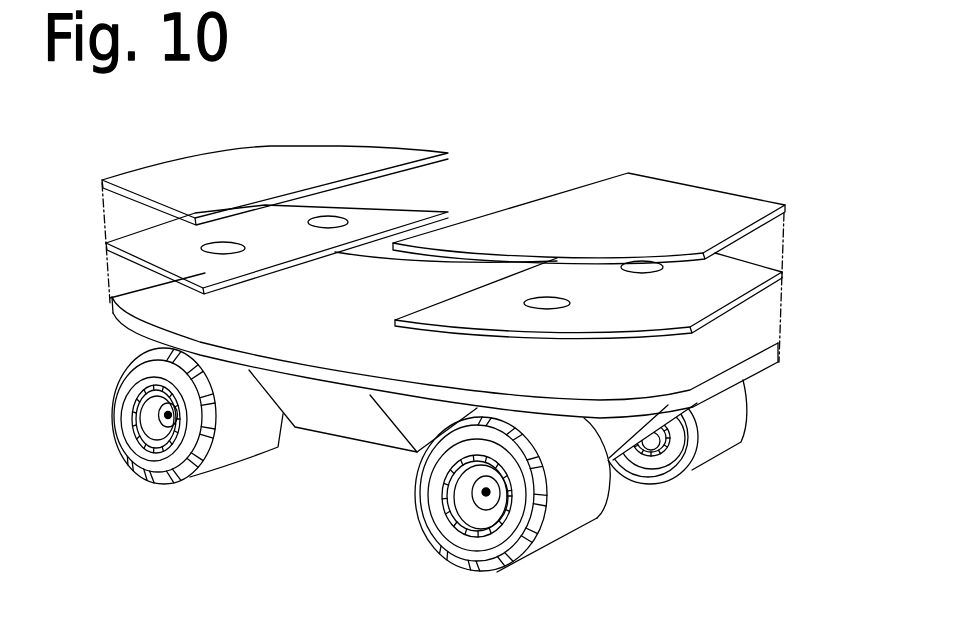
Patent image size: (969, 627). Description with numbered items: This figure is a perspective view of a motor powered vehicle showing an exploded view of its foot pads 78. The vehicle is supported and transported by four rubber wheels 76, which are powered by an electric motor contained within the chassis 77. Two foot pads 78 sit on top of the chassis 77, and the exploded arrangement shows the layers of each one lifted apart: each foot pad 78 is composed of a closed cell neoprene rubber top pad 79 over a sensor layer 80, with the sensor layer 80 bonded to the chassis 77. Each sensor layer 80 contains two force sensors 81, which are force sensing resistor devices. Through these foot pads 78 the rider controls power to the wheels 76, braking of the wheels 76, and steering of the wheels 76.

The rubber wheels 76 is at (572, 513).
The chassis 77 is at (318, 347).
The foot pads 78 is at (435, 127).
The closed cell neoprene rubber top pad 79 is at (138, 188).
The sensor layer 80 is at (140, 250).
The force sensors 81 is at (327, 228).